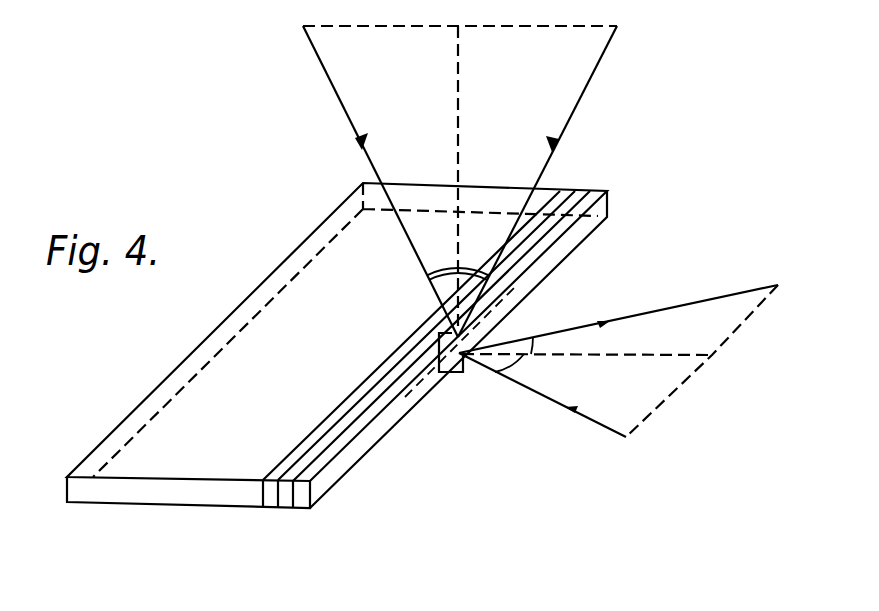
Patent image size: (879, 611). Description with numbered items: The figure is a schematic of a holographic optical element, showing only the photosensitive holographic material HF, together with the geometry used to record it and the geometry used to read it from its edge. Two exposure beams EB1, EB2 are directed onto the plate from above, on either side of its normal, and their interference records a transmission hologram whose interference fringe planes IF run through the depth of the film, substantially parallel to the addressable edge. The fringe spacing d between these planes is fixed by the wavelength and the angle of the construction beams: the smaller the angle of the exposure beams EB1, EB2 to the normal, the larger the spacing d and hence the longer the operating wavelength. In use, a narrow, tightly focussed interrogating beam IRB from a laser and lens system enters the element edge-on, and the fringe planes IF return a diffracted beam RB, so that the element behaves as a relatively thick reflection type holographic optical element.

The holographic material HF is at (220, 494).
The interference fringe spacing d is at (281, 517).
The interference fringe planes IF is at (390, 421).
The first exposure beam EB1 is at (380, 181).
The second exposure beam EB2 is at (543, 181).
The diffraction beam RB is at (618, 309).
The interrogating beam IRB is at (542, 403).